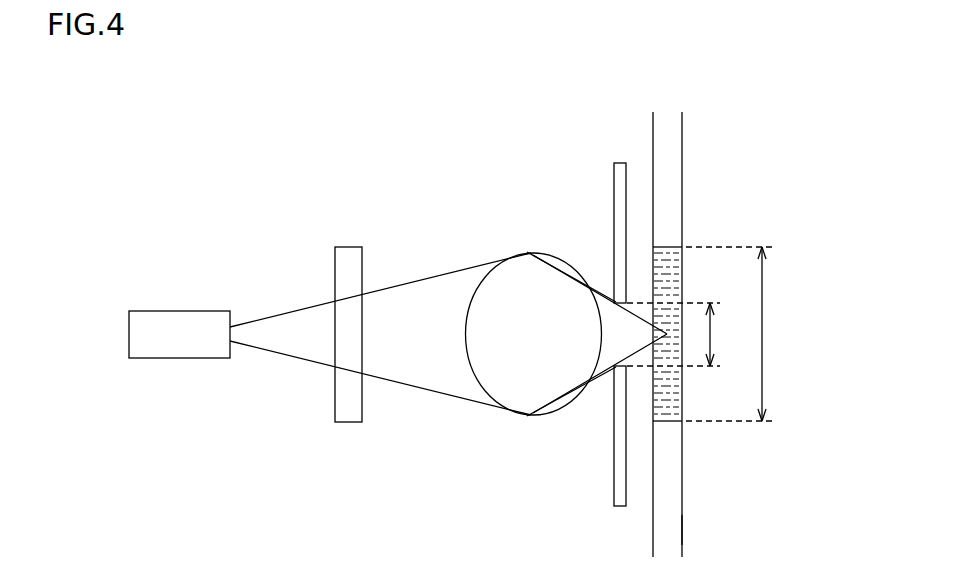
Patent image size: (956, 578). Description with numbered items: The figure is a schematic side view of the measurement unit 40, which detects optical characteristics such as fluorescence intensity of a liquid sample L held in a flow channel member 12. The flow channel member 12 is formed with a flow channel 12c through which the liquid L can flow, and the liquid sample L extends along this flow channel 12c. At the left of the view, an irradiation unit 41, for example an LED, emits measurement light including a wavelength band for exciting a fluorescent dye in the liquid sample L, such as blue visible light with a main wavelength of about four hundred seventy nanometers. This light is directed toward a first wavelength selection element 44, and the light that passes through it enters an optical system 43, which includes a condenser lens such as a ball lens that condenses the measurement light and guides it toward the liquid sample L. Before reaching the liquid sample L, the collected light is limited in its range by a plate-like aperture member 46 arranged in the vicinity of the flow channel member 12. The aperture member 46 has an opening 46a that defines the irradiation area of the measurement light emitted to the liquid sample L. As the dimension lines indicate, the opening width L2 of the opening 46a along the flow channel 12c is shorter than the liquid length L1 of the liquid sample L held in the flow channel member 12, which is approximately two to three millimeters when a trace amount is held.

The measurement unit 40 is at (717, 127).
The irradiation unit 41 is at (179, 359).
The optical system 43 is at (495, 249).
The first wavelength selection element 44 is at (349, 423).
The aperture member 46 is at (619, 508).
The opening 46a is at (611, 306).
The flow channel member 12 is at (683, 496).
The flow channel 12c is at (676, 524).
The liquid sample L is at (666, 416).
The liquid length L1 is at (740, 334).
The opening width L2 is at (724, 334).